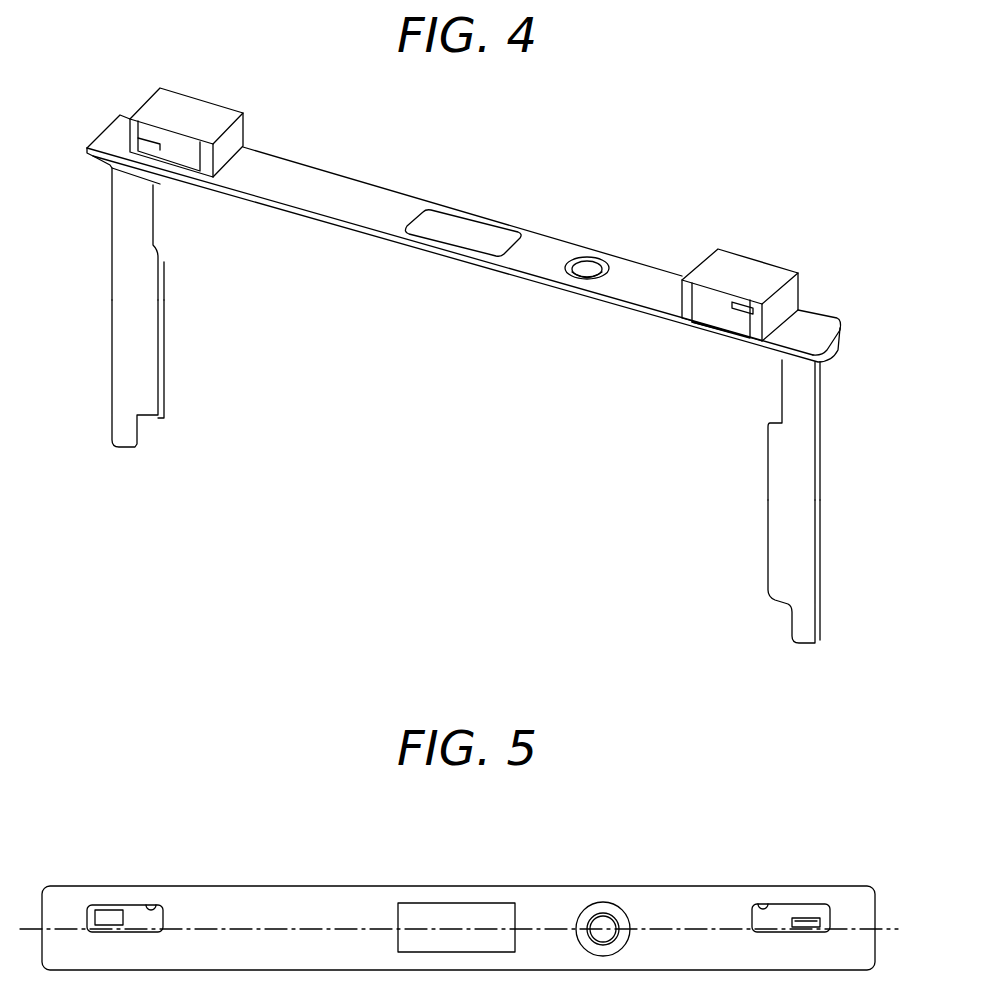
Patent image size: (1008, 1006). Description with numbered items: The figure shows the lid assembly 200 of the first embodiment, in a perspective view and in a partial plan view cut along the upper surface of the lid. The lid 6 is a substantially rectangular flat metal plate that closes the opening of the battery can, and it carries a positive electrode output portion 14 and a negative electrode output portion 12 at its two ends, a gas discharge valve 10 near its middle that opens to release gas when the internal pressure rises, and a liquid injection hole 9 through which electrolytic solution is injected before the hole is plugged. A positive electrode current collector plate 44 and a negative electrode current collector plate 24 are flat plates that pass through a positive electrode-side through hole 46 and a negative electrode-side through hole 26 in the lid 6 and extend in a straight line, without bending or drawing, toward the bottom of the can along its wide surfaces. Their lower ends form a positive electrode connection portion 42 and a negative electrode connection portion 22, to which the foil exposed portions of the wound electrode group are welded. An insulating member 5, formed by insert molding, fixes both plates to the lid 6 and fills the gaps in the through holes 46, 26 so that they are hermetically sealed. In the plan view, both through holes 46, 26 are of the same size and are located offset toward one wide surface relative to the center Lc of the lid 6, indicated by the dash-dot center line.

In FIG. 4, the lid assembly 200 is at (760, 112).
In FIG. 5, the lid assembly 200 is at (776, 794).
In FIG. 4, the lid 6 is at (330, 193).
In FIG. 5, the lid 6 is at (305, 915).
In FIG. 4, the gas discharge valve 10 is at (465, 232).
In FIG. 4, the liquid injection hole 9 is at (594, 256).
In FIG. 5, the liquid injection hole 9 is at (606, 918).
In FIG. 4, the positive electrode output portion 14 is at (188, 107).
In FIG. 4, the negative electrode output portion 12 is at (745, 268).
In FIG. 4, the insulating member 5 is at (236, 135).
In FIG. 5, the insulating member 5 is at (130, 920).
In FIG. 4, the positive electrode current collector plate 44 is at (98, 351).
In FIG. 5, the positive electrode current collector plate 44 is at (102, 912).
In FIG. 4, the positive electrode connection portion 42 is at (132, 306).
In FIG. 4, the negative electrode current collector plate 24 is at (834, 510).
In FIG. 5, the negative electrode current collector plate 24 is at (815, 919).
In FIG. 4, the negative electrode connection portion 22 is at (790, 568).
In FIG. 5, the positive electrode-side through hole 46 is at (158, 907).
In FIG. 5, the negative electrode-side through hole 26 is at (758, 908).
In FIG. 5, the center of the lid Lc is at (888, 933).